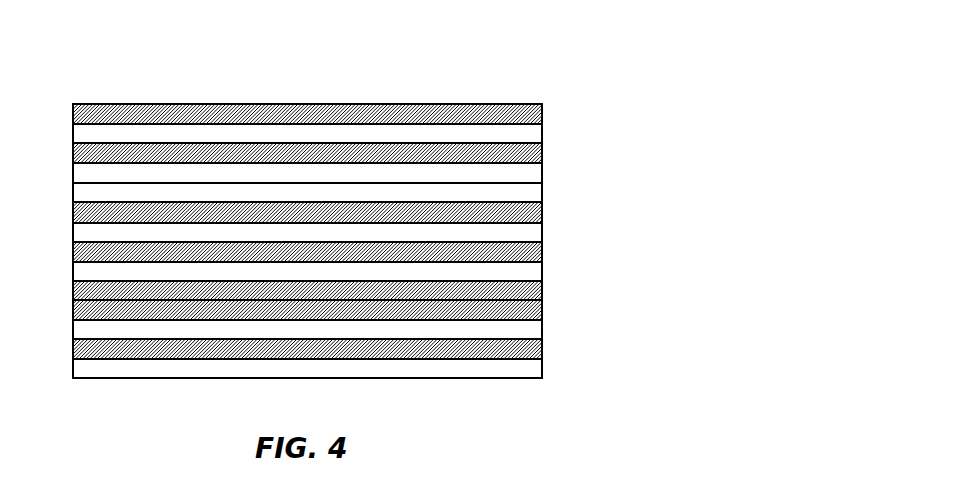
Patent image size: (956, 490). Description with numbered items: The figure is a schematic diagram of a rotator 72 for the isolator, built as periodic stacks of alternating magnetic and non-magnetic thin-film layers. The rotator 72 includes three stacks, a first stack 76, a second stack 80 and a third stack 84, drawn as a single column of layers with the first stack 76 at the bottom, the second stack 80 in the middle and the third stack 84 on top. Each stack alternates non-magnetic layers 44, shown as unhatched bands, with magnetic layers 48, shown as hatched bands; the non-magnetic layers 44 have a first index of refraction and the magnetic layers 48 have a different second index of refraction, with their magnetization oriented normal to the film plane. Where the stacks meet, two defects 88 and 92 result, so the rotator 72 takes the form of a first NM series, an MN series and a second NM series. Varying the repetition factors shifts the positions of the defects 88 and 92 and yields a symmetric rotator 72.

The rotator 72 is at (566, 42).
The third stack 84 is at (62, 105).
The defect 92 is at (542, 183).
The second stack 80 is at (62, 182).
The defect 88 is at (542, 300).
The first stack 76 is at (315, 252).
The magnetic layer 48 is at (542, 347).
The non-magnetic layer 44 is at (542, 370).